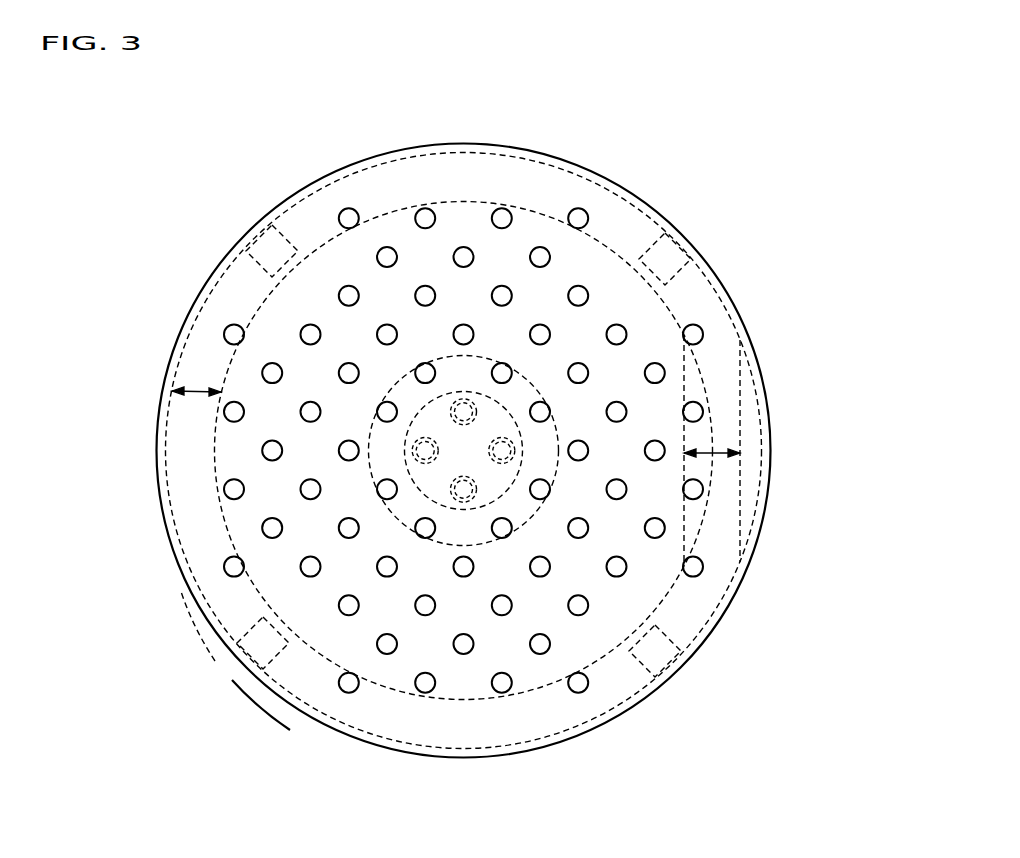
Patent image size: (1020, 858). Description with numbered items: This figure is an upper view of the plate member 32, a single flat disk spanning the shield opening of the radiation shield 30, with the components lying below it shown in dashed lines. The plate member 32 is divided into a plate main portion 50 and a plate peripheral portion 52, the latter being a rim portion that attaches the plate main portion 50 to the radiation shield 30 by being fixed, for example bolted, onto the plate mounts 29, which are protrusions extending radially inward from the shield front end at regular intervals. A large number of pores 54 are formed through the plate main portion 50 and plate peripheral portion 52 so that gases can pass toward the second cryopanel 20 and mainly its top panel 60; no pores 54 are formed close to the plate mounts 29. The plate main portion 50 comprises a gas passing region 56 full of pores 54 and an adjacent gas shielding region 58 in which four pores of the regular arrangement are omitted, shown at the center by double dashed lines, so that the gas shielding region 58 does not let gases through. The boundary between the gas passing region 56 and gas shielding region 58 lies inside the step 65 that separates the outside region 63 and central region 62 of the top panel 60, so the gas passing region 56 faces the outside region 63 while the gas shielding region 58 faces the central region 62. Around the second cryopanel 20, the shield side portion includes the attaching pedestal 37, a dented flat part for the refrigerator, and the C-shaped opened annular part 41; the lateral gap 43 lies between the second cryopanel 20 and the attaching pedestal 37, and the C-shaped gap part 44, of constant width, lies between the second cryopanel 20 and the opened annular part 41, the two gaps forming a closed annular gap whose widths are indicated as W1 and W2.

The plate member 32 is at (170, 192).
The opened annular part 41 is at (195, 302).
The C-shaped gap part 44 is at (203, 370).
The width of outer annular region W2 is at (197, 392).
The lateral gap 43 is at (722, 382).
The attaching pedestal 37 is at (745, 507).
The width of flat side region W1 is at (710, 450).
The top panel 60 is at (463, 510).
The second cryopanel 20 is at (380, 687).
The plate main portion 50 is at (327, 440).
The pores 54 is at (458, 654).
The central region 62 is at (467, 520).
The step 65 is at (495, 540).
The gas shielding region 58 is at (490, 432).
The gas passing region 56 is at (613, 307).
The plate mounts 29 is at (257, 648).
The outside region 63 is at (580, 645).
The plate peripheral portion 52 is at (240, 597).
The radiation shield 30 is at (287, 693).